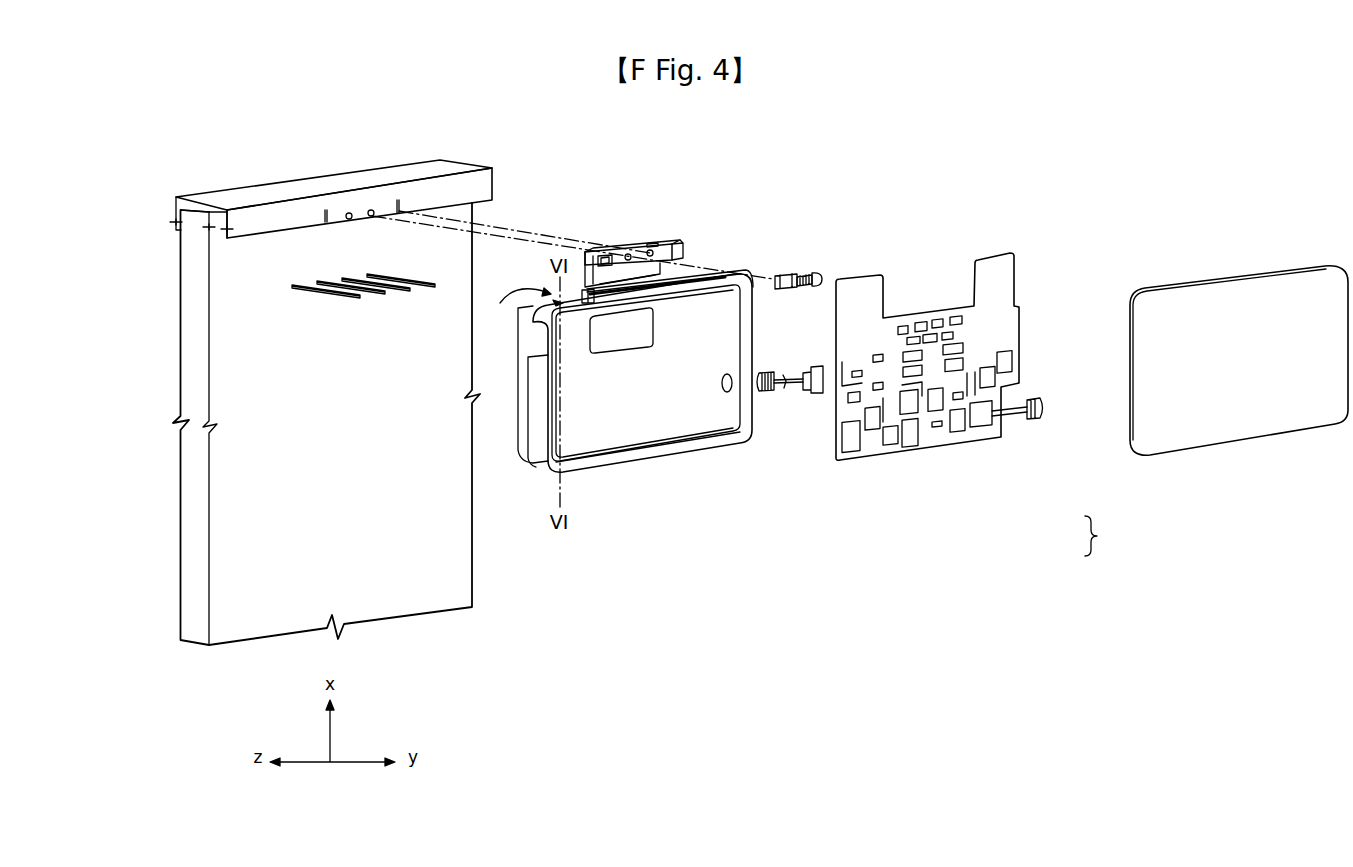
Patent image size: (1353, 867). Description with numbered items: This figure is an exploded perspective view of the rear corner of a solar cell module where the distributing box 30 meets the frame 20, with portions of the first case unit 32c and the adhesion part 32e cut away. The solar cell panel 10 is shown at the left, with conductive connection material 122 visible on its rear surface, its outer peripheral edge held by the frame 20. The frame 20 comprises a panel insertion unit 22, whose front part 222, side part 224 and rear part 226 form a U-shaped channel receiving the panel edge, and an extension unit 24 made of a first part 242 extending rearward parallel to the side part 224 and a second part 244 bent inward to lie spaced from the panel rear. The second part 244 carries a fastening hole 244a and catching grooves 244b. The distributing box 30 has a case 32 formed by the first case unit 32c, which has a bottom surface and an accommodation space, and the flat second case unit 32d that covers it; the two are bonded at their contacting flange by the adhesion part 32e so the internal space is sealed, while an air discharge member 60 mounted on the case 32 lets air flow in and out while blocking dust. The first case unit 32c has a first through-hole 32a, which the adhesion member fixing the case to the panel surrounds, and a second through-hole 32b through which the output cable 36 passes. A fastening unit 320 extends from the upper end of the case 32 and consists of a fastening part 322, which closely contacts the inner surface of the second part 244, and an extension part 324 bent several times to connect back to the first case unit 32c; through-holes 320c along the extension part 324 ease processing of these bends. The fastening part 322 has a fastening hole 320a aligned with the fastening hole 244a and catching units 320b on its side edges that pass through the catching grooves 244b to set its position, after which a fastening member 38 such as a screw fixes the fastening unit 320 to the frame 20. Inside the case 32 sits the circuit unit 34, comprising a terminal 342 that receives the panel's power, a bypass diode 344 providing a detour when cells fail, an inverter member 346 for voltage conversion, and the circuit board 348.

The solar cell panel 10 is at (193, 387).
The frame 20 is at (307, 146).
The panel insertion unit 22 is at (172, 160).
The extension unit 24 is at (334, 164).
The front part 222 is at (175, 221).
The side part 224 is at (183, 215).
The rear part 226 is at (203, 181).
The first part 242 is at (224, 208).
The second part 244 is at (229, 228).
The fastening hole 244a is at (371, 210).
The catching groove 244b is at (398, 200).
The conductive connection material 122 is at (345, 298).
The air discharge member 60 is at (500, 303).
The fastening unit 320 is at (637, 219).
The fastening hole 320a is at (633, 250).
The catching unit 320b is at (668, 243).
The through-hole 320c is at (589, 252).
The fastening part 322 is at (617, 258).
The extension part 324 is at (645, 264).
The fastening member 38 is at (801, 273).
The output cable 36 is at (789, 378).
The case 32 is at (933, 402).
The first through-hole 32a is at (622, 329).
The second through-hole 32b is at (727, 393).
The first case unit 32c is at (682, 440).
The second case unit 32d is at (1233, 428).
The adhesion part 32e is at (598, 463).
The circuit unit 34 is at (976, 356).
The terminal 342 is at (956, 320).
The bypass diode 344 is at (947, 336).
The inverter member 346 is at (954, 365).
The circuit board 348 is at (1004, 362).
The distributing box 30 is at (1125, 518).